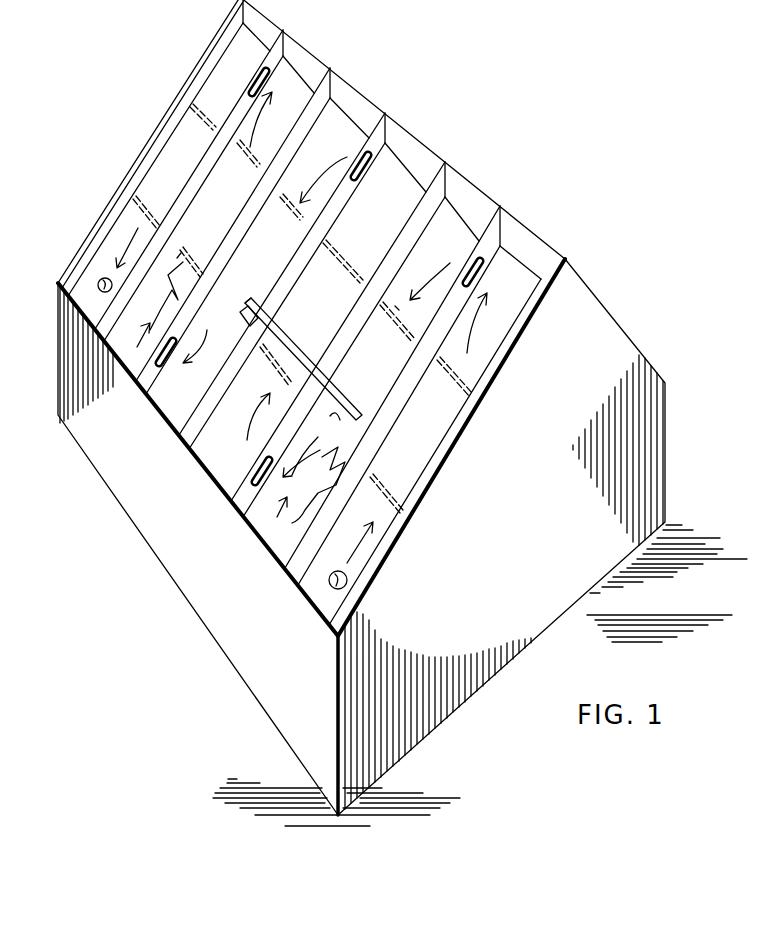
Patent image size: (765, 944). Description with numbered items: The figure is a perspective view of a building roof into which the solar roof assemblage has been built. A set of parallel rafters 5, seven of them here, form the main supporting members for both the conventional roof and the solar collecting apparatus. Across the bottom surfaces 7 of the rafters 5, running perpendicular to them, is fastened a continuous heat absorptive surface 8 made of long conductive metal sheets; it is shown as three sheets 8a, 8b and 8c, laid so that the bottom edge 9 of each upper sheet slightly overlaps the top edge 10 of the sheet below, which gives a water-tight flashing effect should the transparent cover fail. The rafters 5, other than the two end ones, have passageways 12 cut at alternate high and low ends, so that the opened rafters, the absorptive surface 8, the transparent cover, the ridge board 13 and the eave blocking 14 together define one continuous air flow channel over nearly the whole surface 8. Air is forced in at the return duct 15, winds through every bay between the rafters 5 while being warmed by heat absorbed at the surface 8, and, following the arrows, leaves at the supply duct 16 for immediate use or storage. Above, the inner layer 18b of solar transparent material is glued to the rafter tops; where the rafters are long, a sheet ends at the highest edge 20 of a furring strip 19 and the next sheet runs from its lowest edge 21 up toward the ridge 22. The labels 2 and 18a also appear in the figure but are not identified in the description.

The material to be dried 2 is at (231, 399).
The rafters 5 is at (168, 133).
The bottom surfaces 7 is at (210, 176).
The heat absorptive surface 8 is at (652, 364).
The sheet of metal 8a is at (198, 398).
The sheet of metal 8b is at (336, 294).
The sheet of metal 8c is at (450, 256).
The bottom edge 9 is at (145, 218).
The top edge 10 is at (186, 250).
The passageways 12 is at (350, 184).
The ridge board 13 is at (349, 96).
The eave blocking 14 is at (153, 420).
The return duct 15 is at (330, 584).
The supply duct 16 is at (99, 287).
The support 18a is at (508, 937).
The inner layer 18b is at (340, 416).
The furring strip 19 is at (283, 346).
The highest edge 20 is at (280, 326).
The lowest edge 21 is at (237, 321).
The ridge 22 is at (418, 134).